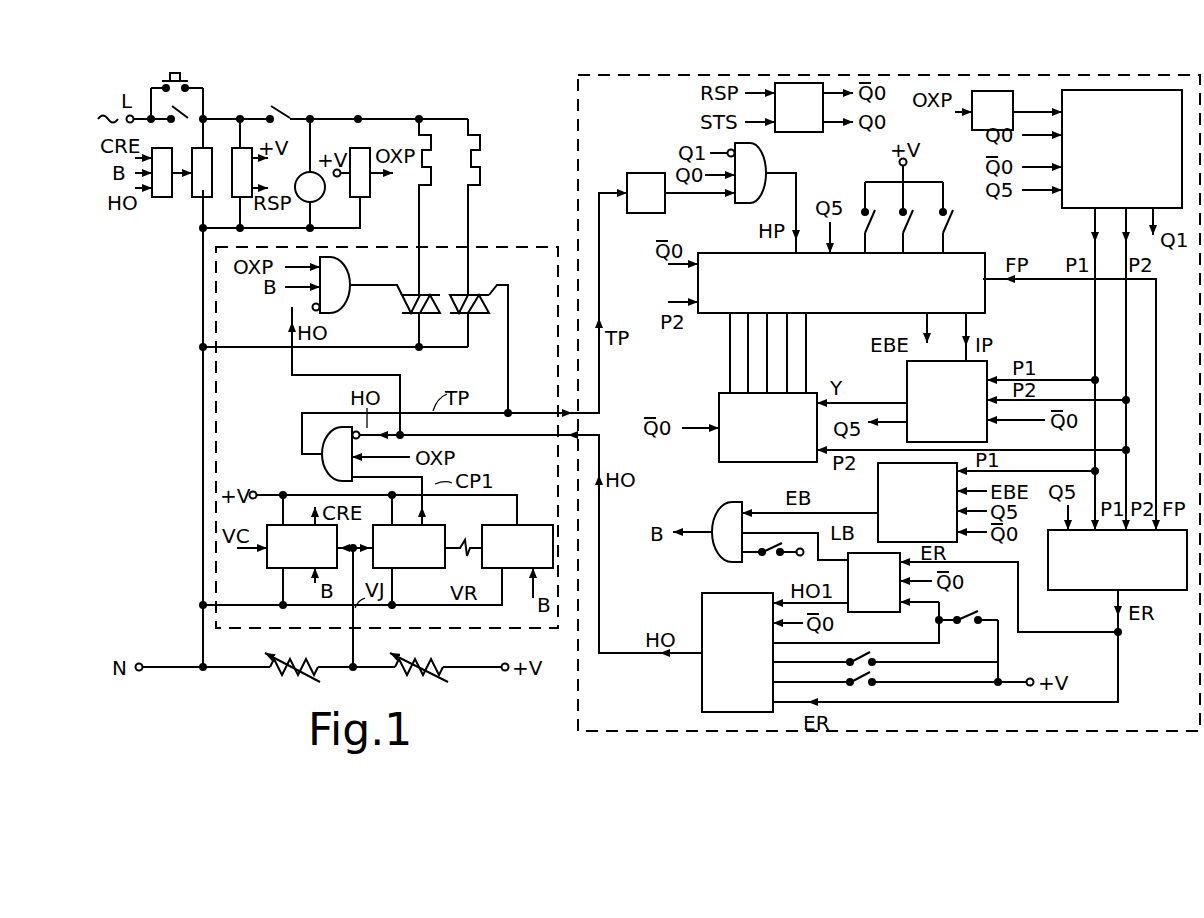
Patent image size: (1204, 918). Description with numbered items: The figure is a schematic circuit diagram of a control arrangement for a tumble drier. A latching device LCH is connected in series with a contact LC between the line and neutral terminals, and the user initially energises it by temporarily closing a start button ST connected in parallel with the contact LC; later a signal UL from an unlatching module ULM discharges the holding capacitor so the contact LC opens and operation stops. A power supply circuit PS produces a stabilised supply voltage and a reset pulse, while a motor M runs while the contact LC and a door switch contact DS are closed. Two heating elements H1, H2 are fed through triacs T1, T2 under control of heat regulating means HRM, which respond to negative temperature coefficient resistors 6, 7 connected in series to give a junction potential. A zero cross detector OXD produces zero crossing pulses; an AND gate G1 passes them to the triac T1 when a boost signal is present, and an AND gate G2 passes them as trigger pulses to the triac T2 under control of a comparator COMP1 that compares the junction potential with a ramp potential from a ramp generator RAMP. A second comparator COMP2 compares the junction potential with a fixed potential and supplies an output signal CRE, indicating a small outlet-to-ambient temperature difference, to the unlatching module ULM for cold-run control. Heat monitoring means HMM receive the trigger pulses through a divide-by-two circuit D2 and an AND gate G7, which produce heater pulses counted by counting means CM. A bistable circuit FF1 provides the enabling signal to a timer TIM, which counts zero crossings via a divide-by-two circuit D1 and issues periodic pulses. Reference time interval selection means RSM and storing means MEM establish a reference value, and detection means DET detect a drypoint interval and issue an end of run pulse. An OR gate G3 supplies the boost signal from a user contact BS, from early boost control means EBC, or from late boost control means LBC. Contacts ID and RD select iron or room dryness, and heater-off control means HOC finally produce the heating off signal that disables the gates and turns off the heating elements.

The start button ST is at (185, 77).
The contact LC is at (179, 126).
The door switch contact DS is at (283, 104).
The output signal CRE is at (162, 172).
The unlatching module ULM is at (162, 197).
The signal UL is at (186, 182).
The latching device LCH is at (200, 197).
The power supply circuit PS is at (228, 173).
The motor M is at (310, 173).
The zero cross detector OXD is at (381, 187).
The heating element H1 is at (440, 207).
The heating element H2 is at (490, 207).
The heat regulating means HRM is at (497, 245).
The heat monitoring means HMM is at (574, 130).
The AND gate G1 is at (358, 285).
The triac T1 is at (414, 322).
The triac T2 is at (479, 349).
The AND gate G2 is at (321, 458).
The comparator COMP1 is at (409, 547).
The comparator COMP2 is at (302, 547).
The ramp generator RAMP is at (517, 546).
The second temperature sensor 7 is at (292, 676).
The first temperature sensor 6 is at (419, 676).
The divide-by-two circuit D2 is at (625, 163).
The AND gate G7 is at (766, 198).
The bistable circuit FF1 is at (799, 107).
The divide-by-two circuit D1 is at (1018, 88).
The timer TIM is at (1122, 149).
The counting means CM is at (841, 283).
The storing means MEM is at (768, 427).
The reference time interval selection means RSM is at (947, 401).
The early boost control means EBC is at (917, 502).
The detection means DET is at (1117, 560).
The OR gate G3 is at (721, 539).
The late boost control means LBC is at (874, 582).
The heater-off control means HOC is at (737, 652).
The contact ID is at (878, 716).
The contact BS is at (842, 423).
The contact RD is at (968, 402).